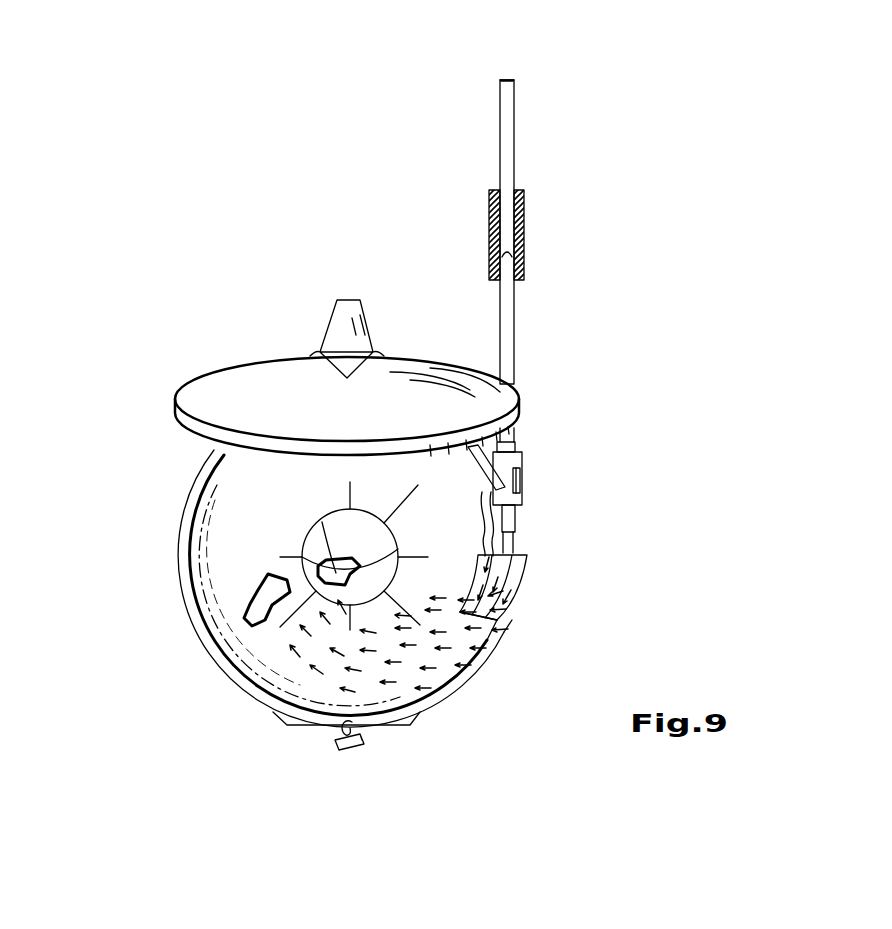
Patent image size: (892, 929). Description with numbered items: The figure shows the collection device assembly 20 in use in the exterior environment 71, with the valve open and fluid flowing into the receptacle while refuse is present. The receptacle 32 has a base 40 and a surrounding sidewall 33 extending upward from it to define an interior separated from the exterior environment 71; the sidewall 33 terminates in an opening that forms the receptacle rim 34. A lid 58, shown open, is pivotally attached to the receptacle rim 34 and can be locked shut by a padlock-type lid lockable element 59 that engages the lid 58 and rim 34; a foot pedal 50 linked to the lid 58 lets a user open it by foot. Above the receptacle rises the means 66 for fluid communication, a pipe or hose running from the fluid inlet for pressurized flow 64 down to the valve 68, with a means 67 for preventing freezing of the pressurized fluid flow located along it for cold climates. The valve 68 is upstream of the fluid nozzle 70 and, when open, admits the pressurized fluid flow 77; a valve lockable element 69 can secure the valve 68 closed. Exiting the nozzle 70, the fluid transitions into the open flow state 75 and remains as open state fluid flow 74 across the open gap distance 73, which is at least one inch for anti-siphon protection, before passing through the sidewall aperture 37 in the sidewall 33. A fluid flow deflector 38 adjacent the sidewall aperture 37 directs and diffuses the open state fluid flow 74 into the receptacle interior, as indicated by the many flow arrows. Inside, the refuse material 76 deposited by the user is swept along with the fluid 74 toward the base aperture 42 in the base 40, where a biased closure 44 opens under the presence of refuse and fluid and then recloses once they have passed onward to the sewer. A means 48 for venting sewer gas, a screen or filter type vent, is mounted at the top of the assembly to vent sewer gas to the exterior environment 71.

The collection device assembly 20 is at (288, 107).
The receptacle 32 is at (160, 552).
The sidewall 33 is at (225, 613).
The receptacle rim 34 is at (200, 628).
The sidewall aperture 37 is at (508, 640).
The fluid flow deflector 38 is at (510, 615).
The base 40 is at (273, 533).
The base aperture 42 is at (258, 695).
The closure 44 is at (320, 523).
The means for venting sewer gas 48 is at (333, 300).
The foot pedal 50 is at (283, 726).
The lid 58 is at (263, 374).
The lid lockable element 59 is at (340, 748).
The fluid inlet for pressurized flow 64 is at (500, 80).
The means for fluid communication 66 is at (515, 145).
The means for preventing freezing of the pressurized fluid flow 67 is at (489, 215).
The valve 68 is at (523, 462).
The valve lockable element 69 is at (522, 480).
The fluid nozzle 70 is at (514, 520).
The exterior environment 71 is at (609, 601).
The open gap distance 73 is at (478, 540).
The open state fluid flow 74 is at (428, 680).
The open flow state 75 is at (514, 535).
The refuse material 76 is at (305, 562).
The pressurized fluid flow 77 is at (512, 75).